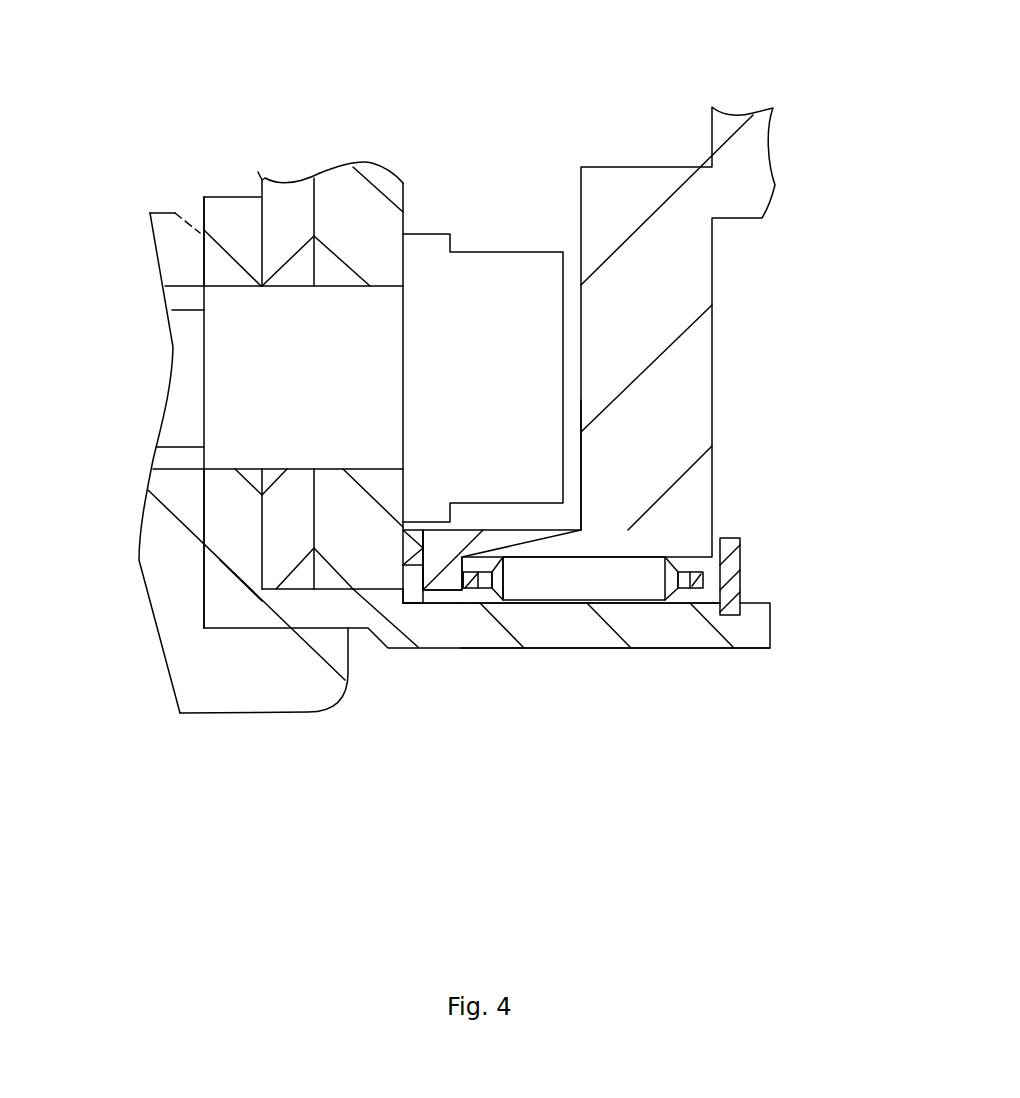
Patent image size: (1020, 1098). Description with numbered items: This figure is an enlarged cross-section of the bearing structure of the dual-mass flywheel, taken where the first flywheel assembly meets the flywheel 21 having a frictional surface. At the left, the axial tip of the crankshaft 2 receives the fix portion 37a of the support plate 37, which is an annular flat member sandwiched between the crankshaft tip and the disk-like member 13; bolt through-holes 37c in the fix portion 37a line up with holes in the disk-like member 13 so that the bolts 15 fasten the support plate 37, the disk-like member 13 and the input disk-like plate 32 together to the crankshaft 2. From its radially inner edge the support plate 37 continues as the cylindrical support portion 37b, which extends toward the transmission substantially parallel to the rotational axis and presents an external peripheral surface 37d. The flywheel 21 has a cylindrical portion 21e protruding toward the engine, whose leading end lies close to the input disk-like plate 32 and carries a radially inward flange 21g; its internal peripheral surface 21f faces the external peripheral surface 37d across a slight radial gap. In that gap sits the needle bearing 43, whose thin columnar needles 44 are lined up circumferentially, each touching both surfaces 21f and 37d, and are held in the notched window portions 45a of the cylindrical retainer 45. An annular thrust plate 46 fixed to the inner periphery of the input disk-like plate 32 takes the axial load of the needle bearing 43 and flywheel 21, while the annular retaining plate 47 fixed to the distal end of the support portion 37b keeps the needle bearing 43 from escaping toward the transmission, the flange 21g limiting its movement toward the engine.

The crankshaft 2 is at (203, 671).
The disk-like member 13 is at (280, 203).
The input disk-like plate 32 is at (352, 193).
The bolt 15 is at (502, 290).
The flywheel having a frictional surface 21 is at (643, 240).
The cylindrical portion 21e is at (532, 542).
The internal peripheral surface 21f is at (583, 560).
The flange 21g is at (442, 552).
The support plate 37 is at (245, 636).
The fix portion 37a is at (230, 518).
The support portion 37b is at (588, 650).
The bolt through-hole 37c is at (237, 286).
The external peripheral surface 37d is at (603, 603).
The needle bearing 43 is at (673, 539).
The needle 44 is at (603, 570).
The retainer 45 is at (693, 580).
The notched window portion 45a is at (487, 584).
The thrust plate 46 is at (408, 552).
The retaining plate 47 is at (740, 578).